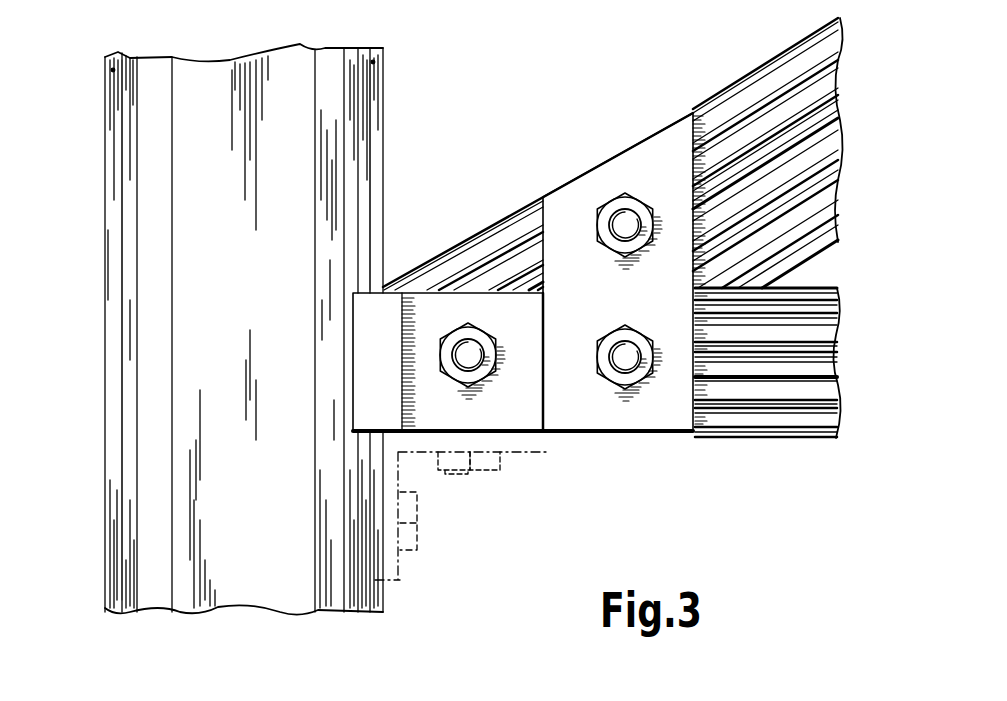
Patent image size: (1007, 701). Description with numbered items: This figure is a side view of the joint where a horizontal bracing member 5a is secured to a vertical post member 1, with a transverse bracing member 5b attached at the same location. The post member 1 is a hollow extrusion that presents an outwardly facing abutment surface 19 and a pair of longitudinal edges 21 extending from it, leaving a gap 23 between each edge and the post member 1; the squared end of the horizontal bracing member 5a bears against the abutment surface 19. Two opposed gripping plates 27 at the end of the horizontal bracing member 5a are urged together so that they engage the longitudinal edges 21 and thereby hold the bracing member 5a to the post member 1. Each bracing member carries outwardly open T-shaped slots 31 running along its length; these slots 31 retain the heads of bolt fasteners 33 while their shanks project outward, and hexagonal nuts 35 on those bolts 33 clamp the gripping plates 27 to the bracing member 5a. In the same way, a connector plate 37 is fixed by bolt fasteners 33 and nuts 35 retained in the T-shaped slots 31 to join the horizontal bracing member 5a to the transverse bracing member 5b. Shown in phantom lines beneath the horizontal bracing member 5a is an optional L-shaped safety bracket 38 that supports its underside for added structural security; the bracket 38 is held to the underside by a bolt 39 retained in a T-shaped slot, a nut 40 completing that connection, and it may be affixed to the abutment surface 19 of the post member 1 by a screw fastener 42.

The post member 1 is at (218, 616).
The horizontal bracing member 5a is at (773, 417).
The transverse bracing member 5b is at (735, 132).
The abutment surface 19 is at (105, 125).
The longitudinal edges 21 is at (320, 55).
The gap 23 is at (130, 256).
The gripping plates 27 is at (512, 413).
The T-shaped slots 31 is at (800, 133).
The bolt fasteners 33 is at (470, 353).
The hexagonal nuts 35 is at (448, 338).
The connector plate 37 is at (693, 282).
The L-shaped safety bracket 38 is at (403, 585).
The bolt 39 is at (472, 478).
The nut 40 is at (495, 467).
The screw fastener 42 is at (417, 552).